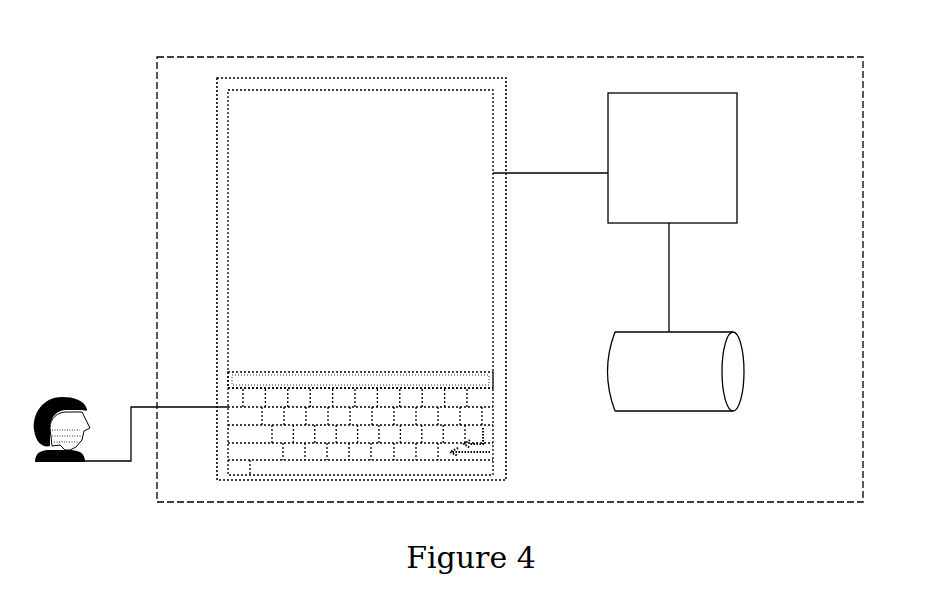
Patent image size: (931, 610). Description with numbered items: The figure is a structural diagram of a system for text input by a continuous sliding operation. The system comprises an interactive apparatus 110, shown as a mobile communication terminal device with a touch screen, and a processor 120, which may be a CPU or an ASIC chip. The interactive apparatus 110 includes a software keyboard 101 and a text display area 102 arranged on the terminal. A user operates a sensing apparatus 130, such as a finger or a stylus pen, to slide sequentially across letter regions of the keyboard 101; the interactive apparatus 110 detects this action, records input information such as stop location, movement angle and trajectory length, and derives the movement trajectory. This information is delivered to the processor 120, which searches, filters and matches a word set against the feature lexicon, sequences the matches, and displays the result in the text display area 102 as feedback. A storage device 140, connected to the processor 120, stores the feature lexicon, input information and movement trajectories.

The keyboard 101 is at (456, 424).
The text display area 102 is at (463, 187).
The interactive apparatus 110 is at (503, 287).
The processor 120 is at (717, 191).
The sensing apparatus 130 is at (62, 397).
The storage device 140 is at (733, 332).